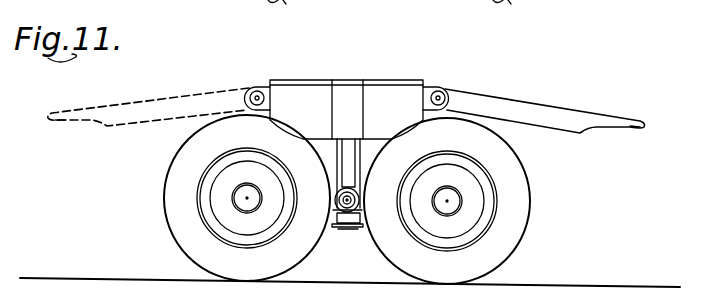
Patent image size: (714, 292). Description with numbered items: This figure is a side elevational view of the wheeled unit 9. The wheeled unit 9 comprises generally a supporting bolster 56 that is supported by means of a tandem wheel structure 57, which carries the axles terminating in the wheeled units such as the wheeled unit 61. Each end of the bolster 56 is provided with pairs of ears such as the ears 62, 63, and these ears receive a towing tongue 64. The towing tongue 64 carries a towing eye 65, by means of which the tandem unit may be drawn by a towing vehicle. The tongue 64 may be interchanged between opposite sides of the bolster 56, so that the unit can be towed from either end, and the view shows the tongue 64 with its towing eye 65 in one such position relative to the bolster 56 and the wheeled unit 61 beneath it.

The wheeled unit 9 is at (407, 78).
The supporting bolster 56 is at (294, 81).
The tandem wheel structure 57 is at (340, 233).
The wheeled unit 61 is at (177, 217).
The ear 62 is at (445, 90).
The ear 63 is at (257, 90).
The towing tongue 64 is at (540, 112).
The towing eye 65 is at (628, 129).